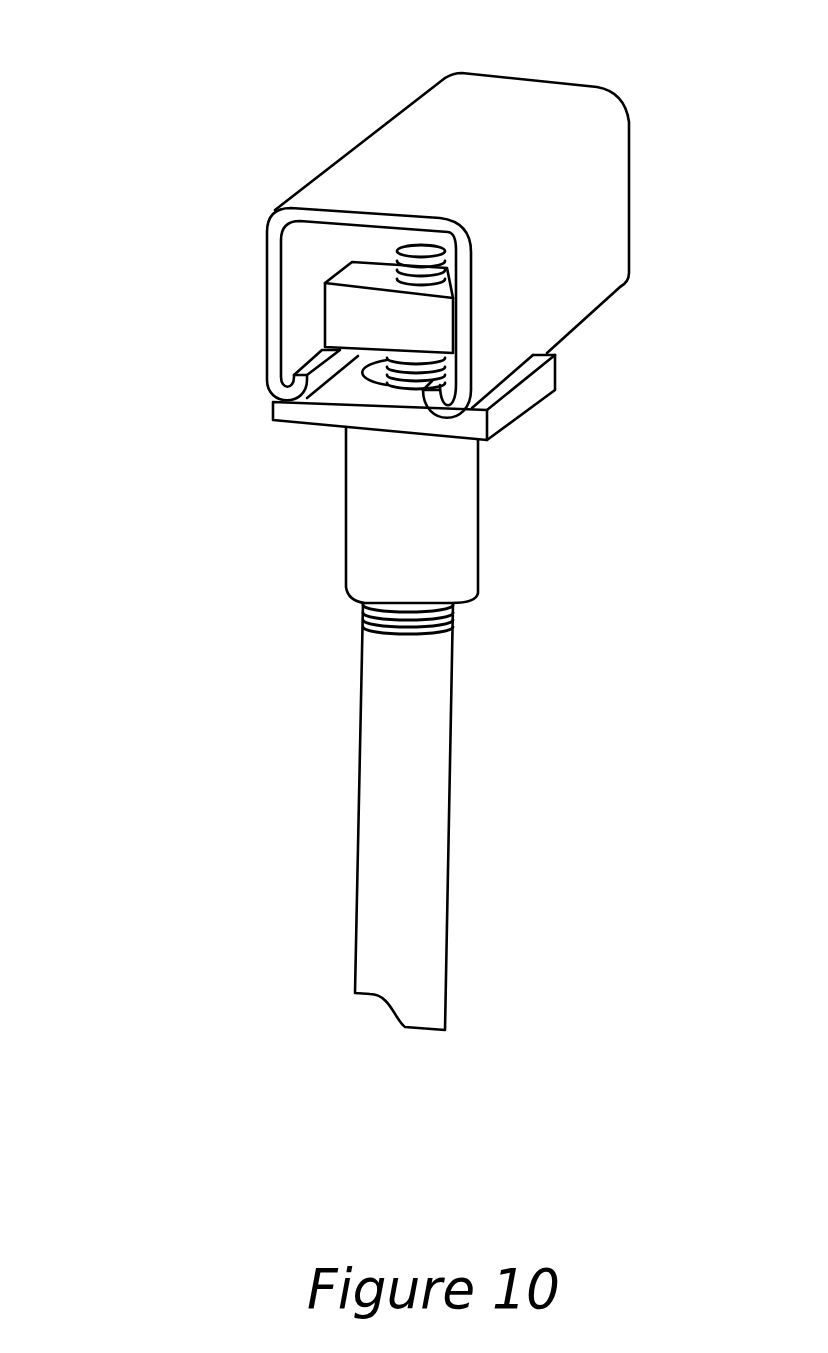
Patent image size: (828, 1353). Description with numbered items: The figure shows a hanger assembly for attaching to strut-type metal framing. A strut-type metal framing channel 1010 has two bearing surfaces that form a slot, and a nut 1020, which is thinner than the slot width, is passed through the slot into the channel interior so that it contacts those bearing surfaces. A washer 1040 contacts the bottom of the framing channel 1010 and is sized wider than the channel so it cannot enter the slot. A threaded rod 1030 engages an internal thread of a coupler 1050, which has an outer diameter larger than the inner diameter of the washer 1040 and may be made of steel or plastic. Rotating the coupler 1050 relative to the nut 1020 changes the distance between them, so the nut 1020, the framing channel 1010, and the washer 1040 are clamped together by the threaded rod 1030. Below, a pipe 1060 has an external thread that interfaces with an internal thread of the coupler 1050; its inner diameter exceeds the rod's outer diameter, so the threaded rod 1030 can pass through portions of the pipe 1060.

The strut-type metal framing channel 1010 is at (407, 105).
The nut 1020 is at (325, 310).
The threaded rod 1030 is at (397, 251).
The washer 1040 is at (273, 401).
The coupler 1050 is at (346, 509).
The pipe 1060 is at (363, 683).